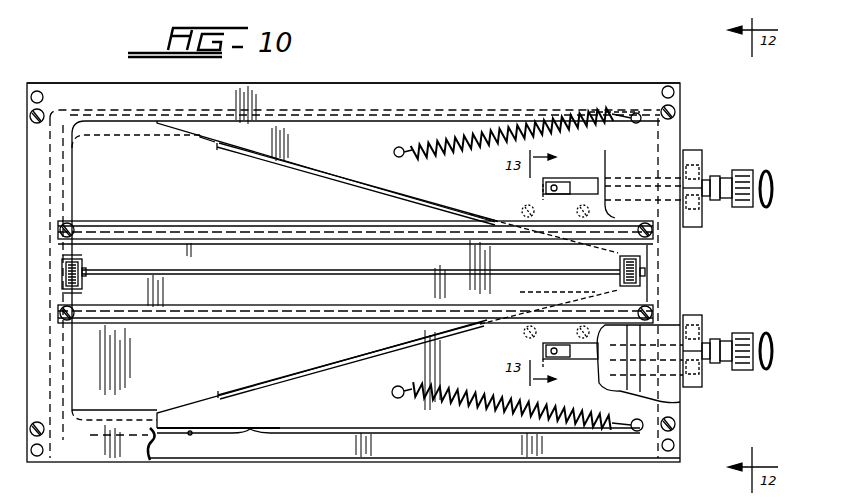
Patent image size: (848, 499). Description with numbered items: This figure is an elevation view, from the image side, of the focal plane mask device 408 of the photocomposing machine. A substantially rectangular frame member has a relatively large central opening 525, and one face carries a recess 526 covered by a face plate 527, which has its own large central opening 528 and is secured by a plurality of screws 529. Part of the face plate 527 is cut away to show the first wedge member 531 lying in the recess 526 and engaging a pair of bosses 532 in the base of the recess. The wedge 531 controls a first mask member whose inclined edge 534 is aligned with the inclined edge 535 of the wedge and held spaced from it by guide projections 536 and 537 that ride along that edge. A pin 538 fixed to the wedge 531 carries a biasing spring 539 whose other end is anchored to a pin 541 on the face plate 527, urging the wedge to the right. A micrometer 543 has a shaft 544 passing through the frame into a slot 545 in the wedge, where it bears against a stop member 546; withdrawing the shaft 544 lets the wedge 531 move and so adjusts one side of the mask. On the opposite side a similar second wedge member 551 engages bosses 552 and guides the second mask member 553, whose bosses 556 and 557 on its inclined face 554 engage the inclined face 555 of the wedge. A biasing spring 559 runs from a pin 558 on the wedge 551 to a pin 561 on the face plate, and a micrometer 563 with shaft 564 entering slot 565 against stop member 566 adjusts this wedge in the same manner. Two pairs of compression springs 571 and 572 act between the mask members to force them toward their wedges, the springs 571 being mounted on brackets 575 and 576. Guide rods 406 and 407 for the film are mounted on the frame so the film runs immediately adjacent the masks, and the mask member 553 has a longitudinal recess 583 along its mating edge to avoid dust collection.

The guide rod 406 is at (145, 225).
The guide rod 407 is at (177, 325).
The focal plane mask device 408 is at (549, 66).
The central opening 525 is at (72, 178).
The recess 526 is at (192, 436).
The face plate 527 is at (382, 92).
The central opening 528 is at (75, 153).
The screws 529 is at (44, 112).
The first wedge member 531 is at (380, 420).
The bosses 532 is at (250, 438).
The inclined edge 534 is at (333, 363).
The inclined edge 535 is at (313, 374).
The guide projection 536 is at (199, 398).
The guide projection 537 is at (598, 293).
The pin 538 is at (396, 386).
The biasing spring 539 is at (470, 386).
The pin 541 is at (640, 433).
The micrometer 543 is at (726, 332).
The micrometer shaft 544 is at (600, 388).
The slot 545 is at (556, 332).
The stop member 546 is at (566, 357).
The second wedge member 551 is at (365, 146).
The bosses 552 is at (263, 100).
The second mask member 553 is at (280, 199).
The inclined face 554 is at (356, 186).
The inclined face 555 is at (350, 181).
The boss 556 is at (217, 146).
The boss 557 is at (592, 250).
The pin 558 is at (395, 146).
The biasing spring 559 is at (464, 157).
The pin 561 is at (636, 124).
The micrometer 563 is at (722, 176).
The micrometer shaft 564 is at (580, 178).
The slot 565 is at (556, 177).
The stop member 566 is at (545, 189).
The compression springs 571 is at (86, 272).
The compression springs 572 is at (620, 267).
The bracket 575 is at (78, 290).
The bracket 576 is at (72, 262).
The longitudinal recess 583 is at (280, 356).